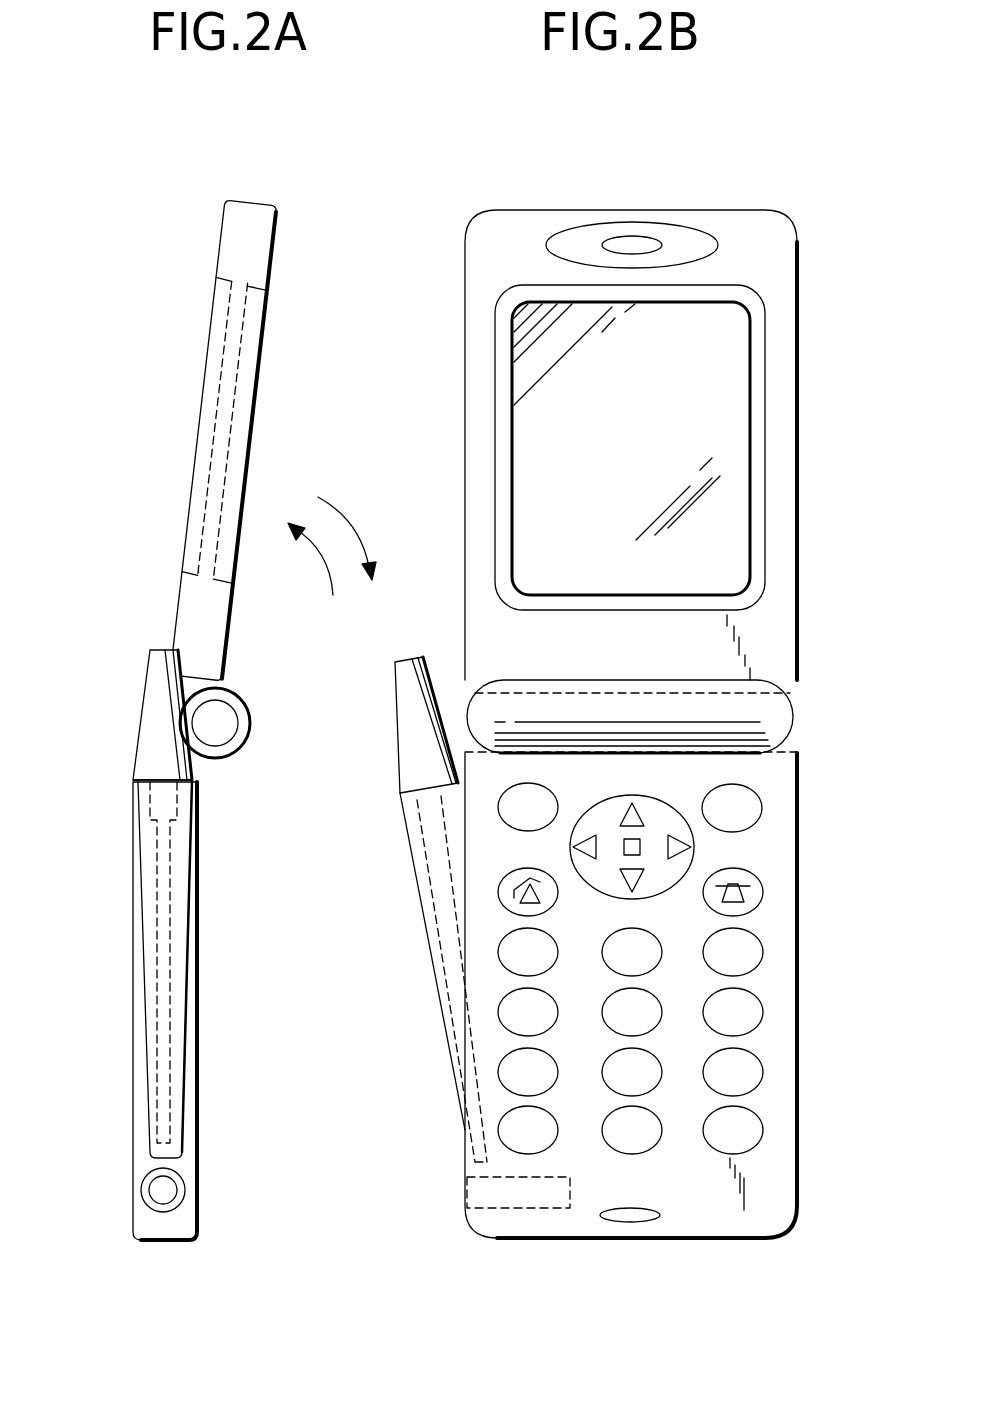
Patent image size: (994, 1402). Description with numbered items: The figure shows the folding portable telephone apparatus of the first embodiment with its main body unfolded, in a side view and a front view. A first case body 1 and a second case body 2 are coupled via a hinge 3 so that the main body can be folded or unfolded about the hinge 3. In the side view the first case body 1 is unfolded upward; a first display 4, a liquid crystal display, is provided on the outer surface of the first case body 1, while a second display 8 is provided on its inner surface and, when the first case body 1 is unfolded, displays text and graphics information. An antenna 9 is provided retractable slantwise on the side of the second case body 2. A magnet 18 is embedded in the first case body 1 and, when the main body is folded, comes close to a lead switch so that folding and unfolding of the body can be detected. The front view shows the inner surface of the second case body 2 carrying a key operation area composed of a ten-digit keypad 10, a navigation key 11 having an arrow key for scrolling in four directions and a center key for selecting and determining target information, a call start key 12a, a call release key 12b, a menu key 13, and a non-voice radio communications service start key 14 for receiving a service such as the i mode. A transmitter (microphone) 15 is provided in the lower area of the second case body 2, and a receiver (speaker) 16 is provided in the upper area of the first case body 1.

In FIG. 2A, the first case body 1 is at (245, 214).
In FIG. 2B, the first case body 1 is at (782, 512).
In FIG. 2A, the second case body 2 is at (165, 1226).
In FIG. 2B, the second case body 2 is at (782, 1183).
In FIG. 2A, the hinge 3 is at (218, 722).
In FIG. 2A, the first display 4 is at (210, 423).
In FIG. 2A, the second display 8 is at (258, 367).
In FIG. 2B, the second display 8 is at (725, 365).
In FIG. 2A, the antenna 9 is at (157, 733).
In FIG. 2B, the antenna 9 is at (422, 735).
In FIG. 2B, the ten-digit keypad 10 is at (752, 1005).
In FIG. 2B, the navigation key 11 is at (660, 813).
In FIG. 2B, the call start key 12a is at (505, 905).
In FIG. 2B, the call release key 12b is at (763, 885).
In FIG. 2B, the menu key 13 is at (762, 815).
In FIG. 2B, the non-voice radio communications service start key 14 is at (498, 807).
In FIG. 2B, the transmitter (microphone) 15 is at (633, 1216).
In FIG. 2B, the receiver (speaker) 16 is at (632, 245).
In FIG. 2A, the magnet 18 is at (163, 1190).
In FIG. 2B, the magnet 18 is at (505, 1208).